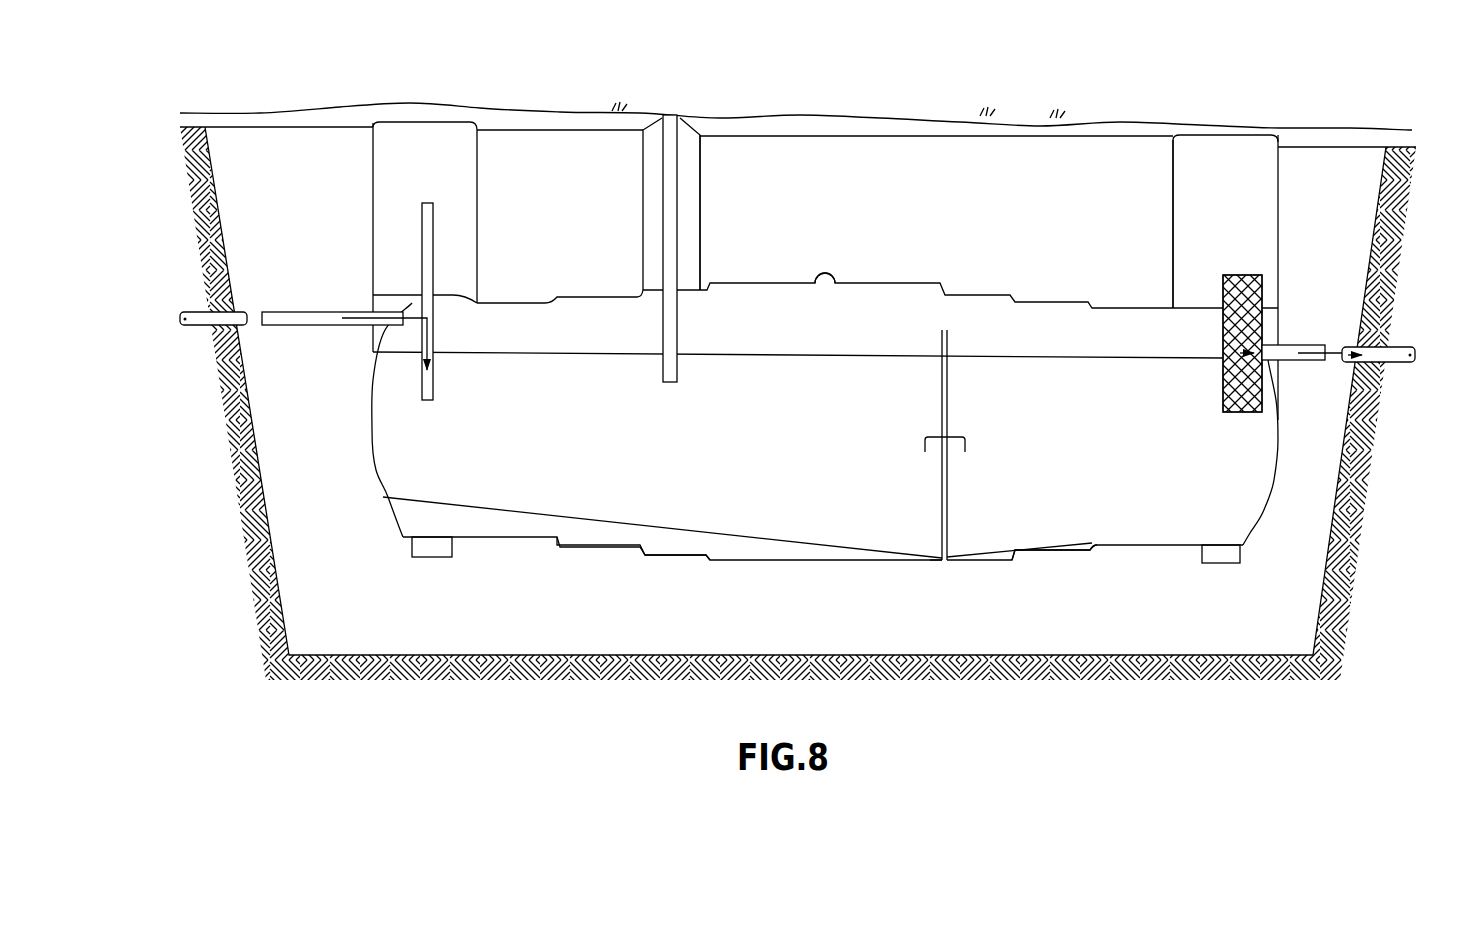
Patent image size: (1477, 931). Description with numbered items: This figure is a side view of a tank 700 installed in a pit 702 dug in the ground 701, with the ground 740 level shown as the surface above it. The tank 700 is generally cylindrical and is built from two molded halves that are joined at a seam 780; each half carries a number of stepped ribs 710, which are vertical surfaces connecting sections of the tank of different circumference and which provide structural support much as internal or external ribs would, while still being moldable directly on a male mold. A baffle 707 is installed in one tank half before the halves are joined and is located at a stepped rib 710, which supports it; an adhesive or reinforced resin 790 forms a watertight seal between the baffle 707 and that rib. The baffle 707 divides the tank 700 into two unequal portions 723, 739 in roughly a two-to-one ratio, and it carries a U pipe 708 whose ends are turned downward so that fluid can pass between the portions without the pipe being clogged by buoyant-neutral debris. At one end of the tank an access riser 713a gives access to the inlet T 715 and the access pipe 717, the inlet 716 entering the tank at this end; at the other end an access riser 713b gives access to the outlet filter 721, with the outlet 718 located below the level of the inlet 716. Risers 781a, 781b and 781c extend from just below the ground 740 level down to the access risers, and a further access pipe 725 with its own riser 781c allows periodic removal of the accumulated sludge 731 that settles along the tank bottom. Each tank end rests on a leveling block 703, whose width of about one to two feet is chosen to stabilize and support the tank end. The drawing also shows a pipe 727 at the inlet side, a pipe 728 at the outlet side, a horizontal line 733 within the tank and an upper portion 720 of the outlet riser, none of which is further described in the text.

The tank 700 is at (841, 335).
The ground 701 is at (146, 140).
The pit 702 is at (308, 590).
The leveling block 703 is at (434, 550).
The baffle 707 is at (937, 393).
The U pipe 708 is at (920, 443).
The stepped ribs 710 is at (552, 547).
The access riser 713a is at (460, 292).
The access riser 713b is at (1193, 298).
The inlet T 715 is at (440, 334).
The inlet 716 is at (329, 330).
The access pipe 717 is at (440, 218).
The outlet 718 is at (1288, 347).
The outlet riser 720 is at (1202, 128).
The outlet filter 721 is at (1218, 385).
The tank portion 723 is at (1137, 465).
The access pipe 725 is at (684, 206).
The inlet sewer pipe 727 is at (195, 303).
The outlet sewer pipe 728 is at (1408, 343).
The accumulated sludge 731 is at (432, 518).
The liquid level line 733 is at (549, 364).
The tank portion 739 is at (735, 462).
The ground level 740 is at (968, 114).
The seam 780 is at (832, 277).
The riser 781a is at (490, 226).
The riser 781b is at (1173, 200).
The riser 781c is at (707, 258).
The adhesive or reinforced resin 790 is at (932, 553).